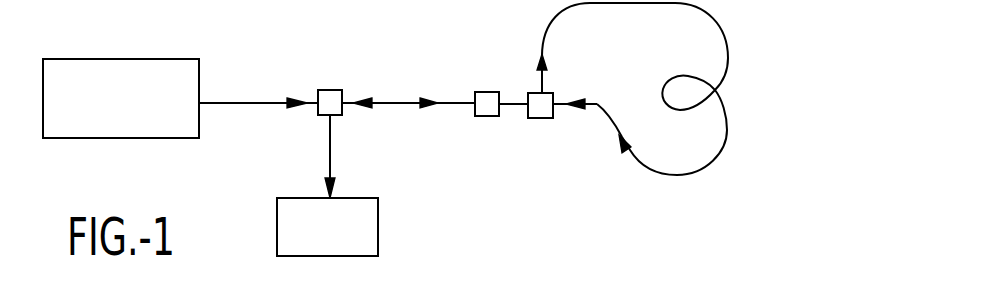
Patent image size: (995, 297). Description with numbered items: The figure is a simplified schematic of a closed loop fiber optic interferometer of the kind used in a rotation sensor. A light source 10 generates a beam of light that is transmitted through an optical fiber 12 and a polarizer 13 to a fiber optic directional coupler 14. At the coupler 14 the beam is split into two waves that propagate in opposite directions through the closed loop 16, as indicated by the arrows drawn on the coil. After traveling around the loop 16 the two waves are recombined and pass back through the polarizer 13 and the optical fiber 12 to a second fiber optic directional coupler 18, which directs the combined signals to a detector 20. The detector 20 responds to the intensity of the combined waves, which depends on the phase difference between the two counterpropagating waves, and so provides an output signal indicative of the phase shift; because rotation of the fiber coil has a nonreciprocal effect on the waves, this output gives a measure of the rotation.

The light source 10 is at (170, 59).
The optical fiber 12 is at (245, 103).
The second fiber optic directional coupler 18 is at (342, 90).
The polarizer 13 is at (499, 93).
The fiber optic directional coupler 14 is at (546, 118).
The closed loop 16 is at (740, 75).
The detector 20 is at (343, 198).